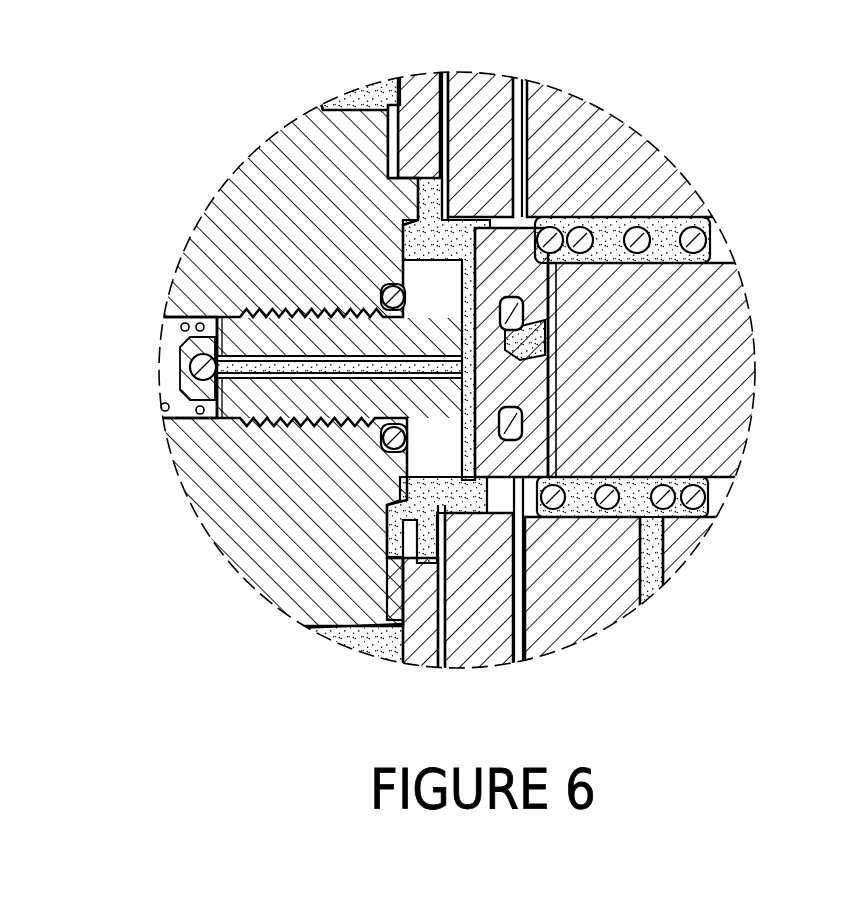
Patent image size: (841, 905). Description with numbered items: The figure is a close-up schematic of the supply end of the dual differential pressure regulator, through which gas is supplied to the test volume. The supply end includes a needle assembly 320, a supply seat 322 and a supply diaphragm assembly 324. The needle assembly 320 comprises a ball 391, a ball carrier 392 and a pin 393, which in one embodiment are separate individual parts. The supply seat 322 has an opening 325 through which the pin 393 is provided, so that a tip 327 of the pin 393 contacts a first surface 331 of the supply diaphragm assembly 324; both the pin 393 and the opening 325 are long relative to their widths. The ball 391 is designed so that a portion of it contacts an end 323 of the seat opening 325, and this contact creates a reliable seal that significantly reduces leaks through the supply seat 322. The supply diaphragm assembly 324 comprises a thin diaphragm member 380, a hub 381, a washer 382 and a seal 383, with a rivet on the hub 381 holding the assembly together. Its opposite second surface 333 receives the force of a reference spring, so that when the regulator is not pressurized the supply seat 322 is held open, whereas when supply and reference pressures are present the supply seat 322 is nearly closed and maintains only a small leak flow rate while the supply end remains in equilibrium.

The needle assembly 320 is at (178, 410).
The supply seat 322 is at (303, 333).
The end of the seat opening 323 is at (215, 333).
The supply diaphragm assembly 324 is at (470, 565).
The opening 325 is at (293, 383).
The tip 327 is at (455, 435).
The first surface 331 is at (485, 500).
The second surface 333 is at (537, 520).
The thin diaphragm member 380 is at (515, 130).
The hub 381 is at (500, 480).
The washer 382 is at (573, 195).
The seal 383 is at (547, 290).
The ball 391 is at (182, 348).
The ball carrier 392 is at (160, 385).
The pin 393 is at (380, 440).